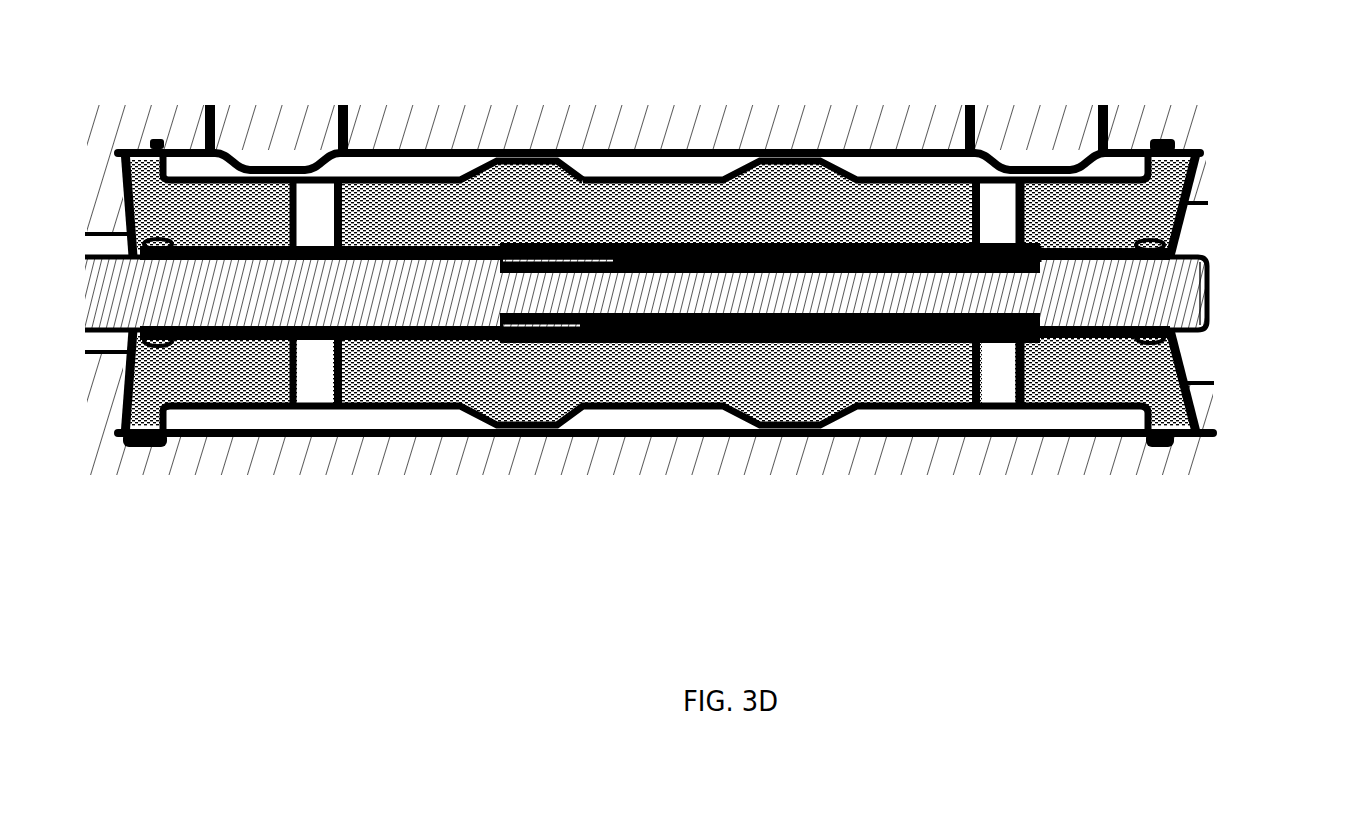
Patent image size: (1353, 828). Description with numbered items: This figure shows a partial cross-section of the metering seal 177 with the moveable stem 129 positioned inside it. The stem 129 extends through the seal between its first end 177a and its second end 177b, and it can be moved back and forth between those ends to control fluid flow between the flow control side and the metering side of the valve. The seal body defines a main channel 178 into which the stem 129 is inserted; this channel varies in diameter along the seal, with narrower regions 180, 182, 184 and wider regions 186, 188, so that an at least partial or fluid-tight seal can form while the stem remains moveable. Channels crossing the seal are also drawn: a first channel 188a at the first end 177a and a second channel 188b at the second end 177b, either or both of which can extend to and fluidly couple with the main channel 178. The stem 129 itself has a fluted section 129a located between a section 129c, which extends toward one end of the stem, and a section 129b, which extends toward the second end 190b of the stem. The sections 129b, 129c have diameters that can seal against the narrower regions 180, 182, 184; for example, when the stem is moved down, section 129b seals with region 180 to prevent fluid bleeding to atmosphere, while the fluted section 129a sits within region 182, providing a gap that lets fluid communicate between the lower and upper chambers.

The moveable stem 129 is at (1183, 332).
The fluted section 129a is at (578, 330).
The section 129b is at (1138, 277).
The section 129c is at (380, 337).
The metering seal 177 is at (1083, 383).
The first end of the metering seal 177a is at (244, 168).
The second end of the metering seal 177b is at (1200, 432).
The main channel 178 is at (795, 336).
The region 180 is at (1100, 253).
The region 182 is at (654, 250).
The region 184 is at (214, 227).
The region 186 is at (883, 228).
The region 188 is at (425, 237).
The first channel 188a is at (311, 383).
The second channel 188b is at (1003, 385).
The second end of the stem 190b is at (1187, 287).